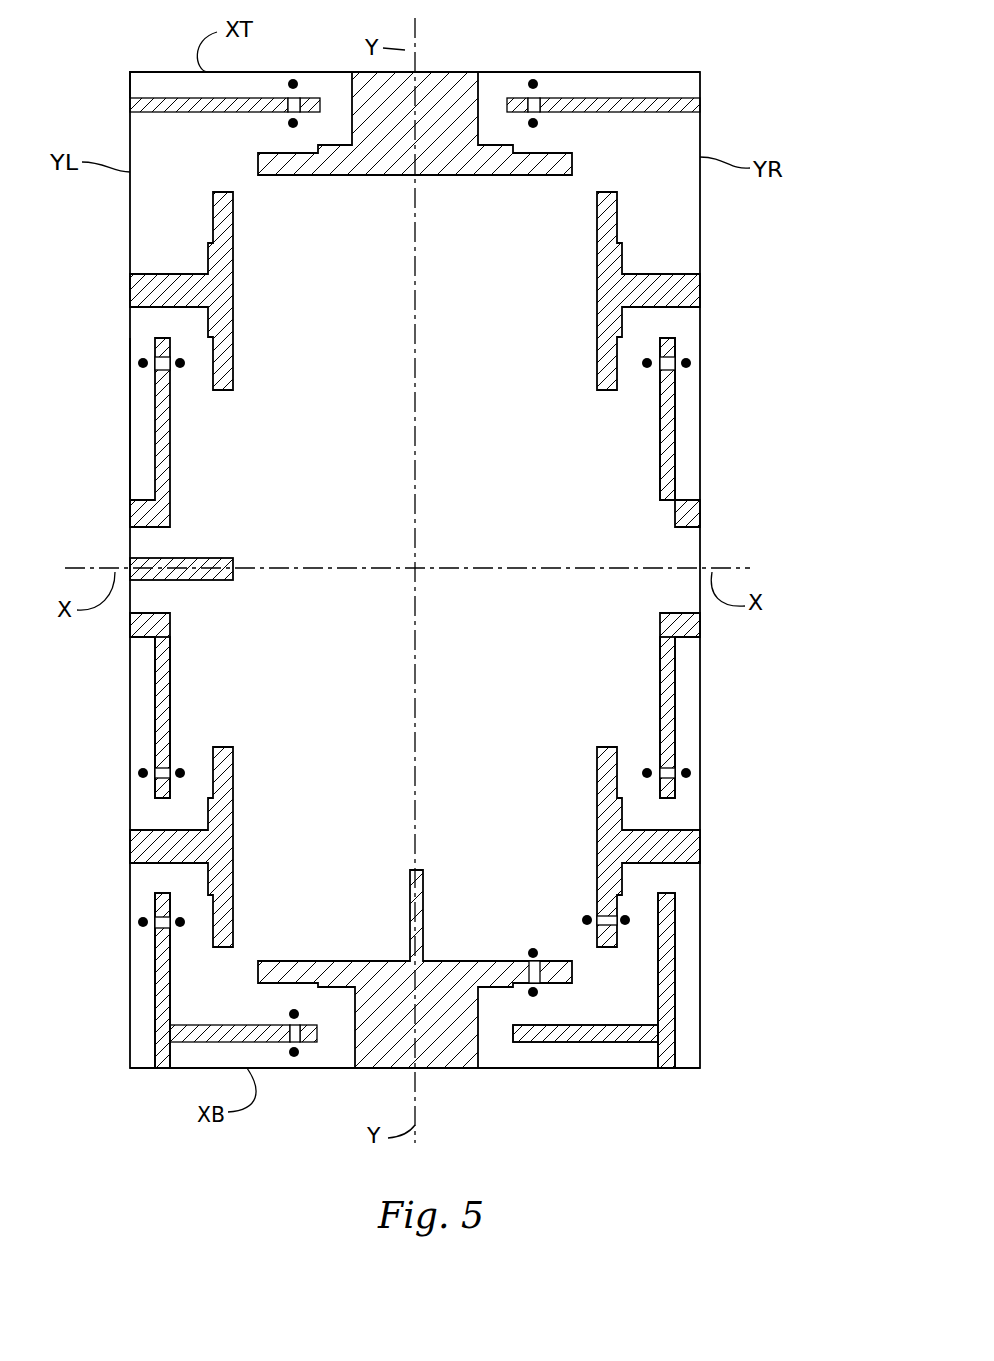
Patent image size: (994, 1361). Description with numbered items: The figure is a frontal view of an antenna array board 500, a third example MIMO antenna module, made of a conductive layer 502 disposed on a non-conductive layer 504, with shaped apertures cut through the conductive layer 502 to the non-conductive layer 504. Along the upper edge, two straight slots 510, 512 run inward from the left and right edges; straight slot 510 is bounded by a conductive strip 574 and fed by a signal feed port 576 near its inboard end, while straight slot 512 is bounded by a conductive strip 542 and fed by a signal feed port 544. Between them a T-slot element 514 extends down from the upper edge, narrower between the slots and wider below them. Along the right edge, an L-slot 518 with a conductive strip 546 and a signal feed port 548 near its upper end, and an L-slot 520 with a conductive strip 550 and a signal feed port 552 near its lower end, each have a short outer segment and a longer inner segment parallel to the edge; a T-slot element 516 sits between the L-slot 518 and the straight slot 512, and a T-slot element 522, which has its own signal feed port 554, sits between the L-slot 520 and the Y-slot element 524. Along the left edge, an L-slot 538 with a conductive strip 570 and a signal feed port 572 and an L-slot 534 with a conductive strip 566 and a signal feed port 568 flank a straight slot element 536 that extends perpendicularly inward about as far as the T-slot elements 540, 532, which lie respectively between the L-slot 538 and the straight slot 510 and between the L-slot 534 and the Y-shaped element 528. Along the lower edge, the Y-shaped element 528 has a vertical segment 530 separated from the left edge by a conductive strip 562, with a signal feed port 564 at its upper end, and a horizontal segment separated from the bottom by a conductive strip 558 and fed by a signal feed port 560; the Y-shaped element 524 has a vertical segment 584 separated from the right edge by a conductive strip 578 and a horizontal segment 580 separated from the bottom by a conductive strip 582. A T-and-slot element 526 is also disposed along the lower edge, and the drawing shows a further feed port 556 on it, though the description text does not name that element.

The antenna array board 500 is at (642, 28).
The conductive layer 502 is at (353, 704).
The non-conductive layer 504 is at (397, 172).
The straight slot 510 is at (130, 99).
The straight slot 512 is at (700, 100).
The T-slot element 514 is at (440, 72).
The T-slot element 516 is at (700, 292).
The L-slot 518 is at (700, 450).
The L-slot 520 is at (680, 728).
The T-slot element 522 is at (695, 843).
The Y-slot element 524 is at (661, 1074).
The T-and-slot element 526 is at (400, 1050).
The Y-shaped element 528 is at (192, 1042).
The vertical segment 530 is at (158, 1010).
The T-slot element 532 is at (138, 842).
The L-slot 534 is at (158, 675).
The straight slot element 536 is at (132, 567).
The L-slot 538 is at (158, 462).
The T-slot element 540 is at (130, 285).
The conductive strip 542 is at (605, 85).
The signal feed port 544 is at (533, 79).
The conductive strip 546 is at (680, 410).
The signal feed port 548 is at (691, 363).
The conductive strip 550 is at (692, 683).
The signal feed port 552 is at (691, 773).
The signal feed port 554 is at (630, 920).
The bottom center fastener 556 is at (536, 997).
The conductive strip 558 is at (178, 1053).
The signal feed port 560 is at (299, 1054).
The conductive strip 562 is at (140, 965).
The signal feed port 564 is at (138, 922).
The conductive strip 566 is at (131, 720).
The signal feed port 568 is at (138, 773).
The conductive strip 570 is at (135, 407).
The signal feed port 572 is at (138, 363).
The conductive strip 574 is at (130, 72).
The signal feed port 576 is at (293, 79).
The conductive strip 578 is at (688, 1033).
The horizontal segment 580 is at (600, 1032).
The conductive strip 582 is at (635, 1057).
The vertical segment 584 is at (680, 995).